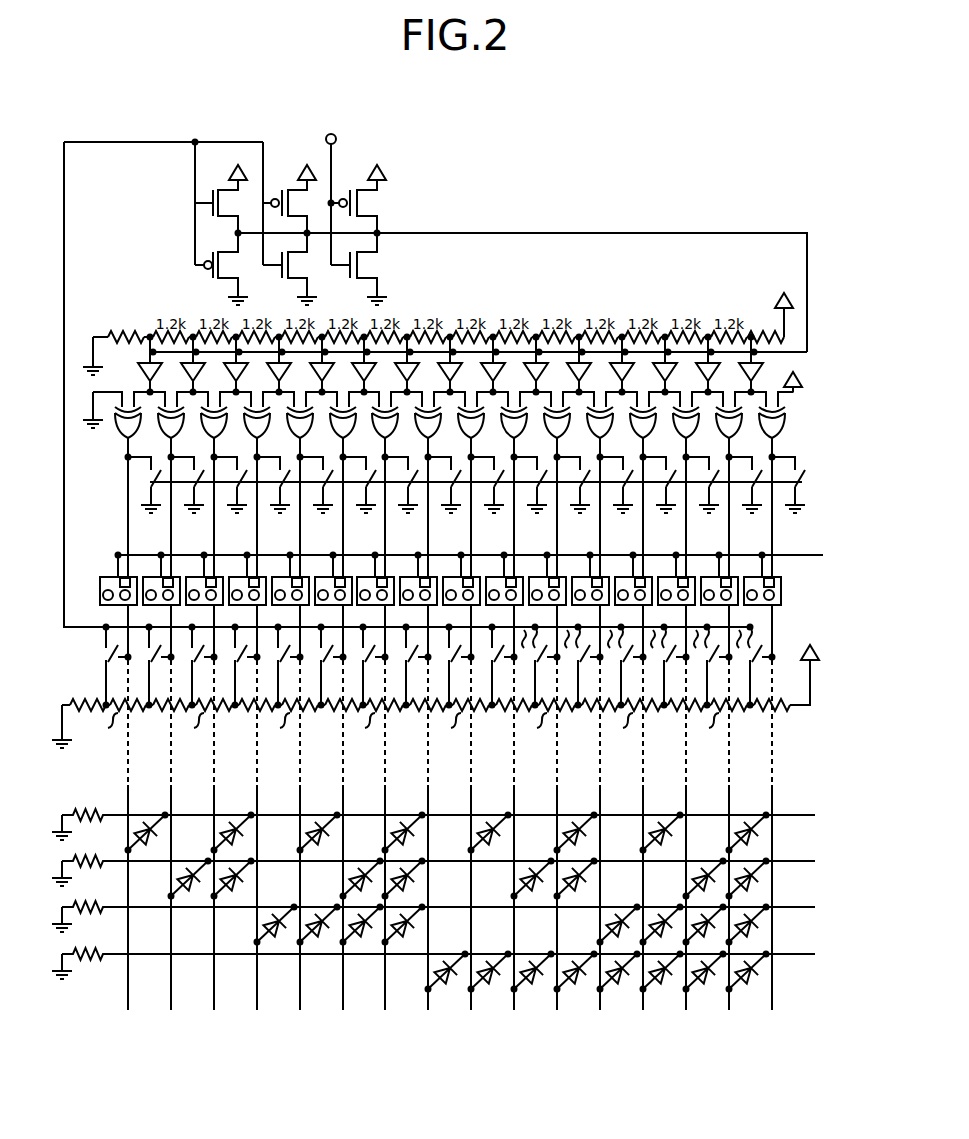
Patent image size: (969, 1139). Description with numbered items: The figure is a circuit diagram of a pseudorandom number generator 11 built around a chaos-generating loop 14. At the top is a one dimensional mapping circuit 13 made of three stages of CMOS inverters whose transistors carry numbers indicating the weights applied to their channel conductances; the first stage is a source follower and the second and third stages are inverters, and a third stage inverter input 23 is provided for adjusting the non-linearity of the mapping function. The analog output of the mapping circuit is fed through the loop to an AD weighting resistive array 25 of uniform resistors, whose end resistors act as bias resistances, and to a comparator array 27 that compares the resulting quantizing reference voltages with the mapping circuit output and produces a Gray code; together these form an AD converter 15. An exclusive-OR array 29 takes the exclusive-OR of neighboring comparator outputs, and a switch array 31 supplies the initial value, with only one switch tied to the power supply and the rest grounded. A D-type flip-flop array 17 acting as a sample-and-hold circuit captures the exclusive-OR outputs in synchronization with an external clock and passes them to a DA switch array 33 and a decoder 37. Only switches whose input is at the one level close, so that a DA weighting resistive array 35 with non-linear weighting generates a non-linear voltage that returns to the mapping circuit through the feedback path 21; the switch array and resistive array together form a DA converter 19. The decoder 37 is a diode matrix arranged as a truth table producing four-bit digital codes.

The pseudorandom number generator 11 is at (704, 109).
The one dimensional mapping circuit 13 is at (403, 177).
The chaos-generating loop 14 is at (621, 235).
The AD converter 15 is at (846, 325).
The D-type flip-flop array 17 is at (782, 603).
The DA converter 19 is at (856, 615).
The feedback path 21 is at (243, 142).
The third stage inverter input 23 is at (333, 134).
The AD weighting resistive array 25 is at (788, 340).
The comparator array 27 is at (757, 372).
The exclusive-OR array 29 is at (785, 425).
The switch array 31 is at (800, 489).
The DA switch array 33 is at (760, 652).
The DA weighting resistive array 35 is at (790, 713).
The decoder 37 is at (819, 813).